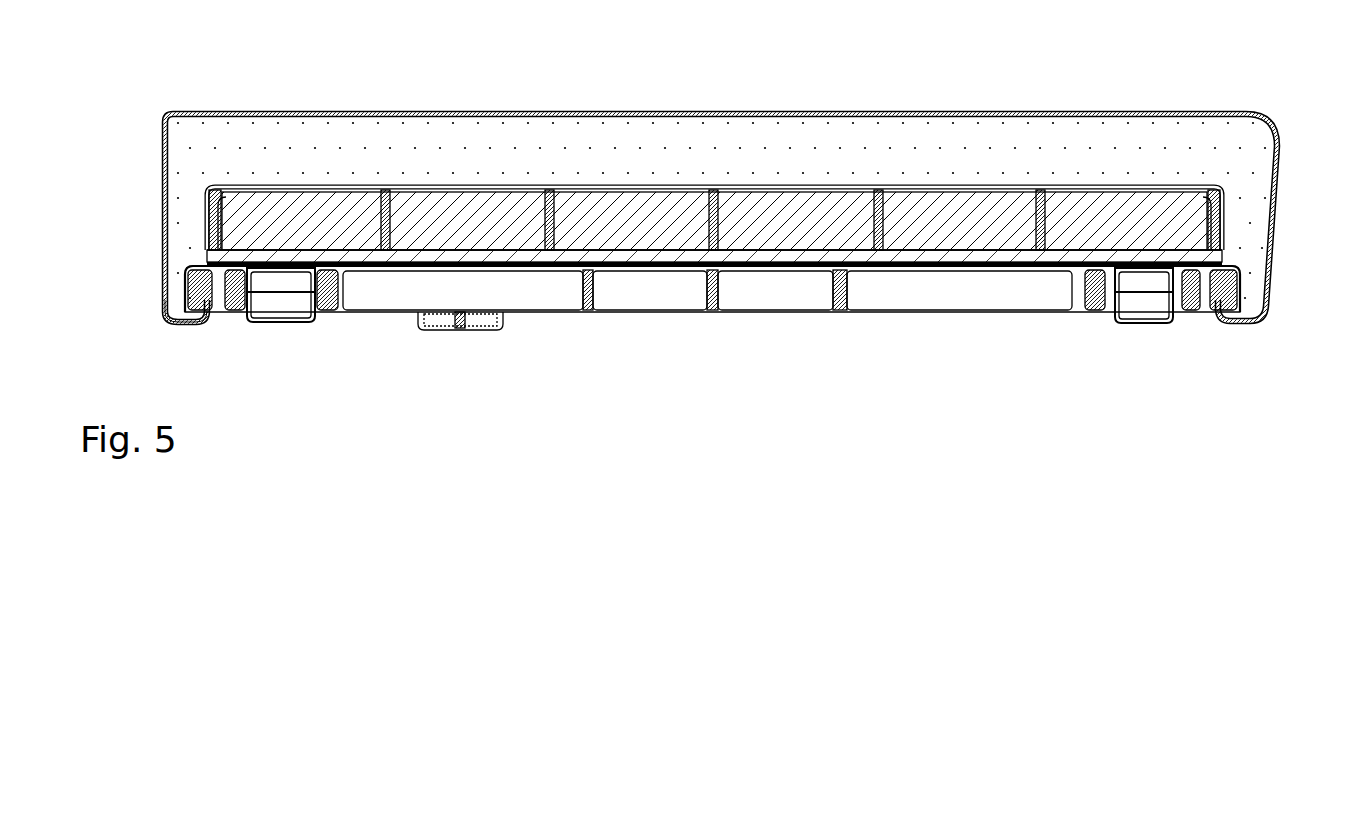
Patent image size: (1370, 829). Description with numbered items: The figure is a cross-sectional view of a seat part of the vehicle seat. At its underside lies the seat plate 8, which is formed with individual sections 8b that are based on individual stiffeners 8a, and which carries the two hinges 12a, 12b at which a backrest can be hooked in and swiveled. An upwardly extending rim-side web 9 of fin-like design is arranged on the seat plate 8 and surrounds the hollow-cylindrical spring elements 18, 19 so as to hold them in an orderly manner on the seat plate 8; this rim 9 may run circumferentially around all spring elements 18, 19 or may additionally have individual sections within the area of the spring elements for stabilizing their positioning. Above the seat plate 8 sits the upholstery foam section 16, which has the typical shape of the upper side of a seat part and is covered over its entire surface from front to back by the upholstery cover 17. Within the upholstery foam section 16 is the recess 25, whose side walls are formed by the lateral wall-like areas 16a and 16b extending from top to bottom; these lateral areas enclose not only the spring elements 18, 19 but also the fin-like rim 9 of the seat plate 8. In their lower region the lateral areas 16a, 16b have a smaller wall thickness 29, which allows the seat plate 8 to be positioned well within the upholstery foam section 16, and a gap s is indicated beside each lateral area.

The seat plate 8 is at (655, 300).
The stiffeners 8a is at (588, 300).
The individual sections 8b is at (548, 300).
The rim-side web 9 is at (206, 238).
The hinge 12a is at (297, 318).
The hinge 12b is at (1143, 318).
The upholstery foam section 16 is at (721, 206).
The lateral wall-like area 16a is at (165, 212).
The lateral wall-like area 16b is at (1262, 250).
The upholstery cover 17 is at (912, 111).
The spring element 18 is at (714, 307).
The spring element 19 is at (948, 233).
The recess 25 is at (207, 205).
The smaller wall thickness 29 is at (172, 292).
The gap s is at (707, 257).